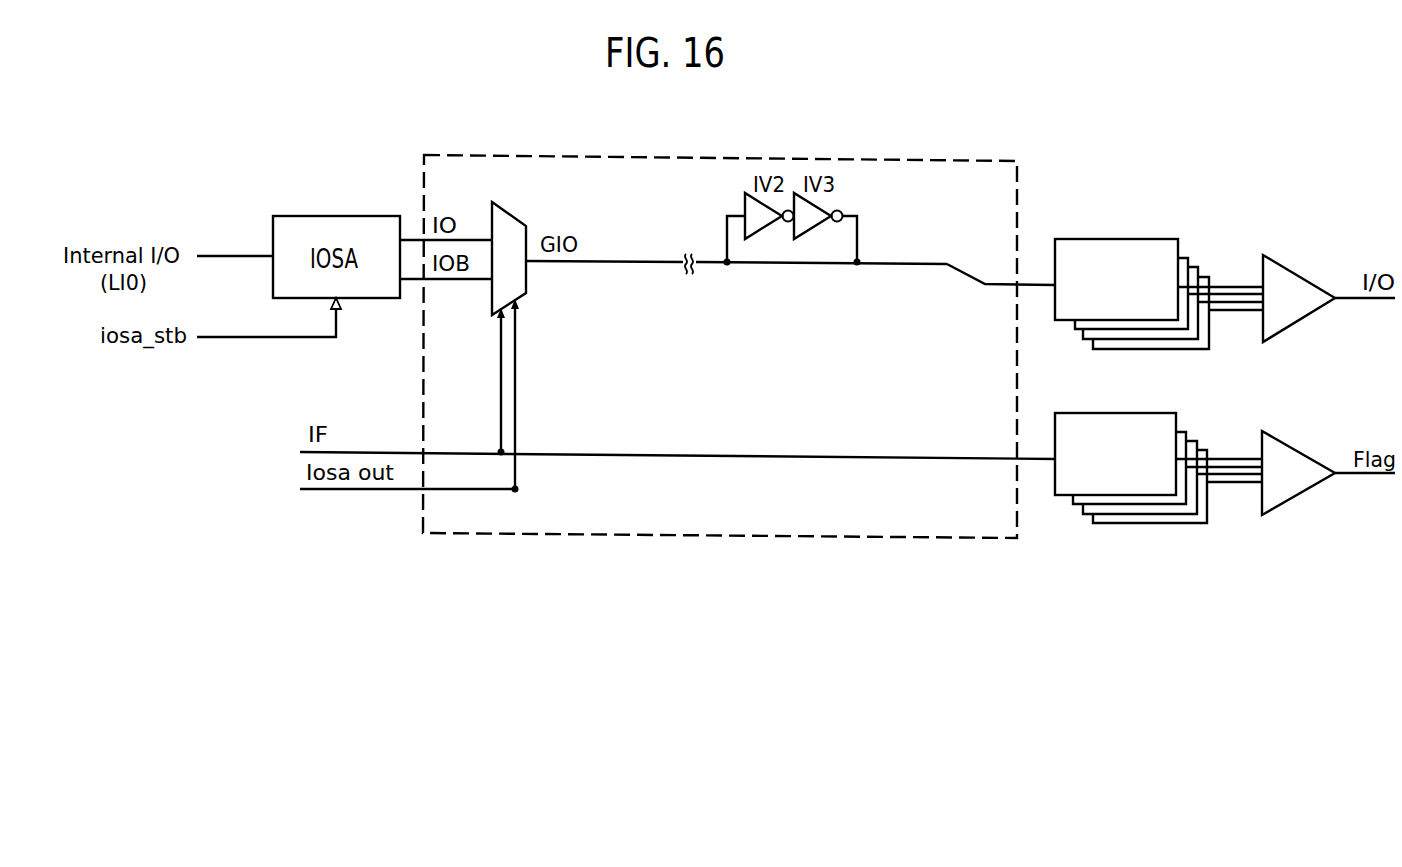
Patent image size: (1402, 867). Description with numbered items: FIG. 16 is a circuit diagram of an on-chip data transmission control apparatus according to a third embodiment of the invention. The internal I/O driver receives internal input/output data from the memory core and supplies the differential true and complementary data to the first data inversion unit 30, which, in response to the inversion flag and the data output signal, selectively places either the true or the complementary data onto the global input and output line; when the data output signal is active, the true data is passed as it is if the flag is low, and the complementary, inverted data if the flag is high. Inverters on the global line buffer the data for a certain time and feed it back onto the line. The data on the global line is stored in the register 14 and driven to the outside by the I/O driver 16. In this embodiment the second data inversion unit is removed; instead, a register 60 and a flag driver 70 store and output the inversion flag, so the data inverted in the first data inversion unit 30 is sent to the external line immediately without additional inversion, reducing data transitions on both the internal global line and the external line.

The first data inversion unit 30 is at (531, 214).
The register 14 is at (1138, 239).
The I/O driver 16 is at (1300, 277).
The register 60 is at (1136, 413).
The flag driver 70 is at (1300, 453).